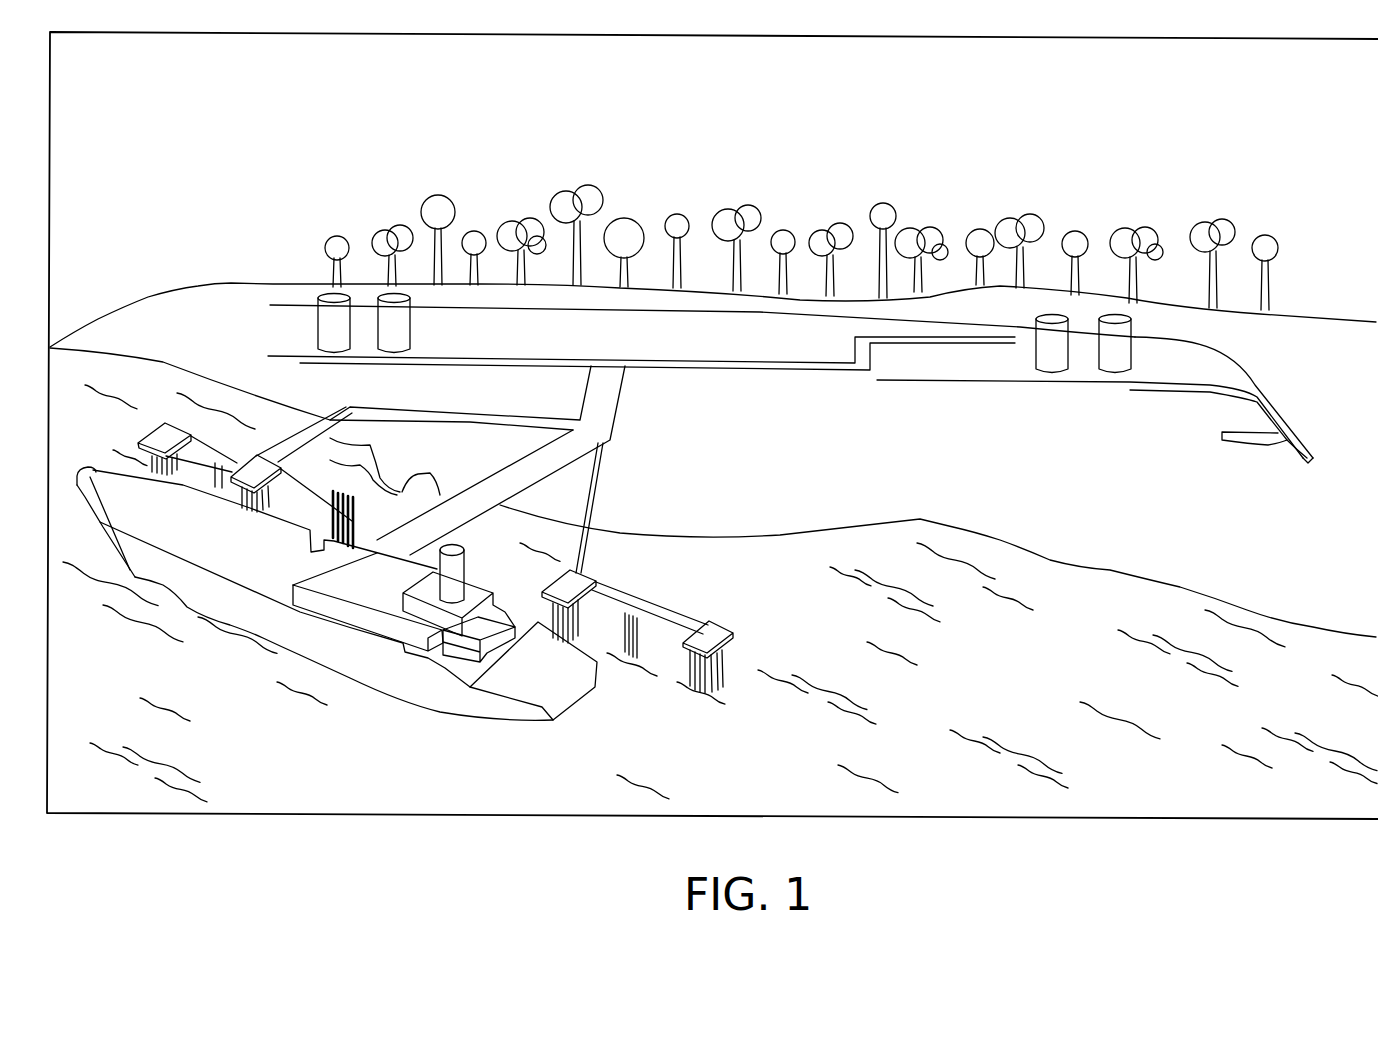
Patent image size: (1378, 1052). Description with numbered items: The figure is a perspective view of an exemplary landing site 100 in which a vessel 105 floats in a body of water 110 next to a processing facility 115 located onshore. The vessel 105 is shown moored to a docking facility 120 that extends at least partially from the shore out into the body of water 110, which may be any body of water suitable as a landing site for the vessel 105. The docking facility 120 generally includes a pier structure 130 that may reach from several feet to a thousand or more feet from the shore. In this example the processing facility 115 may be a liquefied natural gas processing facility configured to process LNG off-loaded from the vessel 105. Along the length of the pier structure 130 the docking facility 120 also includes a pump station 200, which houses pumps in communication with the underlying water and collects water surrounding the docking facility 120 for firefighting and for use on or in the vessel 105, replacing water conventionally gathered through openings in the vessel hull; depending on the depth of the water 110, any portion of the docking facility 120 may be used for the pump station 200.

The landing site 100 is at (1119, 162).
The vessel 105 is at (588, 714).
The body of water 110 is at (1030, 688).
The processing facility 115 is at (1274, 397).
The docking facility 120 is at (616, 583).
The pier structure 130 is at (570, 450).
The pump station 200 is at (402, 492).